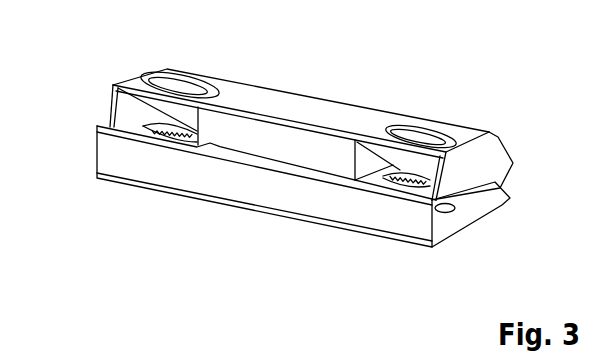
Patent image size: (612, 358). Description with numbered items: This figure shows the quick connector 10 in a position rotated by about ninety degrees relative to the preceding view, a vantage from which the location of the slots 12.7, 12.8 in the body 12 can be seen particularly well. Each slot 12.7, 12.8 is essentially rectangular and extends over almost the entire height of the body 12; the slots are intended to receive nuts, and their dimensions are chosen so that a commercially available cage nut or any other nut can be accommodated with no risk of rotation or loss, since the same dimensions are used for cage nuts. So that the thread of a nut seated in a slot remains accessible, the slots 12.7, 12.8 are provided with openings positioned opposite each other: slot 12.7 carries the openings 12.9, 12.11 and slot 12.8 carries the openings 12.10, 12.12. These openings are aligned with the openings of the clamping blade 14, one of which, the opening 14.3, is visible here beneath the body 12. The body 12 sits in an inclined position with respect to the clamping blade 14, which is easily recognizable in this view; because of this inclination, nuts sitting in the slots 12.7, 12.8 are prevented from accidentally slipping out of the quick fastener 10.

The quick connector 10 is at (523, 94).
The body 12 is at (288, 105).
The slot 12.7 is at (139, 109).
The slot 12.8 is at (379, 161).
The opening 12.9 is at (168, 139).
The opening 12.10 is at (412, 184).
The opening 12.11 is at (188, 82).
The opening 12.12 is at (438, 132).
The clamping blade 14 is at (220, 203).
The opening 14.3 is at (454, 214).